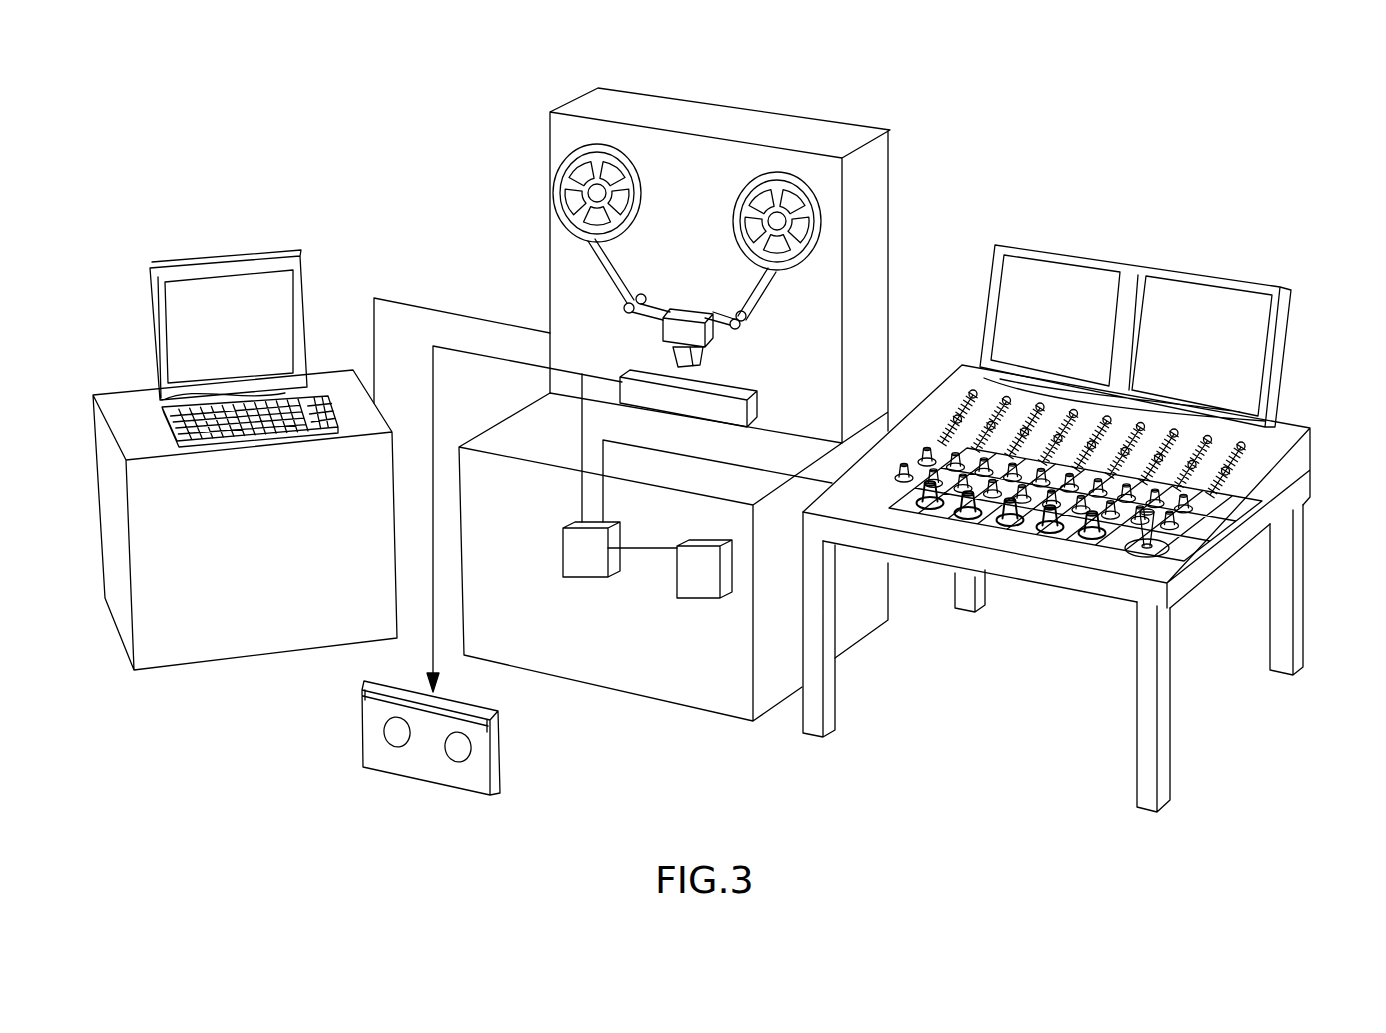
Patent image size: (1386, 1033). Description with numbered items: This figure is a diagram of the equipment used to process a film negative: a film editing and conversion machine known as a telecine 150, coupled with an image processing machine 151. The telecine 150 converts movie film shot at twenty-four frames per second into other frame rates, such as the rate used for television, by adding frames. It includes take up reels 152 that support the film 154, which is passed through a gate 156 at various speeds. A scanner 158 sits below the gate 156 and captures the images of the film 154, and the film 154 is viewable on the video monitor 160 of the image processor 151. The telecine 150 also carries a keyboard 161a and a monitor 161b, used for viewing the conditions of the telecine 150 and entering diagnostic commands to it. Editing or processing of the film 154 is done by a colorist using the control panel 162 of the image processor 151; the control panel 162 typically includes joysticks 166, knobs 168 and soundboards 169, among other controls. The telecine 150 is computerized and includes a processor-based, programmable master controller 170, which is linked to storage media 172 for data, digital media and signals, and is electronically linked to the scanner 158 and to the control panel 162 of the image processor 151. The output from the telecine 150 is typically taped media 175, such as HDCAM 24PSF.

The telecine 150 is at (905, 63).
The image processing machine 151 is at (1088, 518).
The take up reels 152 is at (774, 170).
The film 154 is at (616, 266).
The gate 156 is at (714, 334).
The scanner 158 is at (760, 404).
The video monitor 160 is at (1218, 296).
The keyboard 161a is at (320, 398).
The monitor 161b is at (260, 256).
The control panel 162 is at (1172, 530).
The joysticks 166 is at (1152, 535).
The knobs 168 is at (1090, 540).
The soundboards 169 is at (1242, 438).
The master controller 170 is at (570, 578).
The storage media 172 is at (697, 598).
The taped media 175 is at (498, 758).